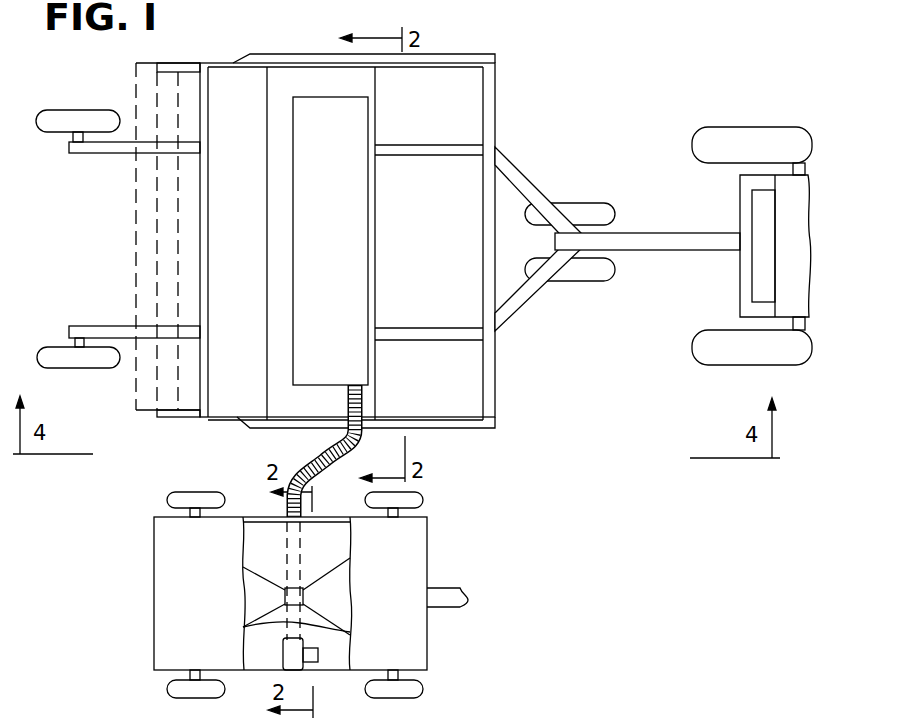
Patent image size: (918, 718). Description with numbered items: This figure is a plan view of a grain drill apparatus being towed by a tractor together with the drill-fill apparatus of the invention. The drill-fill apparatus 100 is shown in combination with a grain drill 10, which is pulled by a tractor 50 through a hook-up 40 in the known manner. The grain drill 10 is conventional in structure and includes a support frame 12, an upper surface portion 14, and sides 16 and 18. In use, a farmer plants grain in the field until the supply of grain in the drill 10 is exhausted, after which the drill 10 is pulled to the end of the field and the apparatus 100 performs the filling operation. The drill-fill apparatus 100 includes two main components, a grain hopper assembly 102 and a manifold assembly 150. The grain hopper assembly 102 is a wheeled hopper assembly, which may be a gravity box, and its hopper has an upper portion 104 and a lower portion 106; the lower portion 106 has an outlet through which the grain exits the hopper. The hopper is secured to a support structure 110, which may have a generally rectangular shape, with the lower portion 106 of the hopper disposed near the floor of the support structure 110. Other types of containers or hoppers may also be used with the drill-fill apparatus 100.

The grain drill 10 is at (186, 212).
The support frame 12 is at (488, 93).
The upper surface portion 14 is at (275, 115).
The side 16 is at (307, 55).
The side 18 is at (245, 425).
The hook-up 40 is at (600, 241).
The tractor 50 is at (784, 220).
The drill-fill apparatus 100 is at (470, 457).
The grain hopper assembly 102 is at (142, 570).
The upper portion 104 is at (255, 648).
The lower portion 106 is at (345, 668).
The support structure 110 is at (295, 598).
The manifold assembly 150 is at (432, 605).